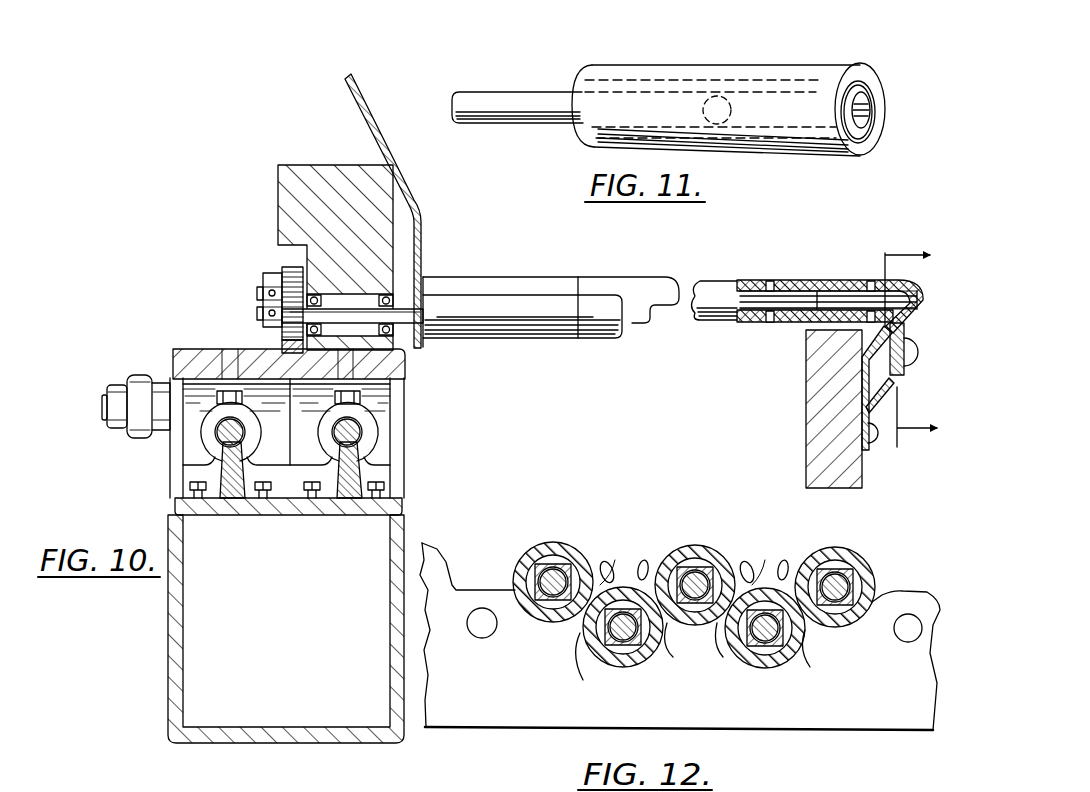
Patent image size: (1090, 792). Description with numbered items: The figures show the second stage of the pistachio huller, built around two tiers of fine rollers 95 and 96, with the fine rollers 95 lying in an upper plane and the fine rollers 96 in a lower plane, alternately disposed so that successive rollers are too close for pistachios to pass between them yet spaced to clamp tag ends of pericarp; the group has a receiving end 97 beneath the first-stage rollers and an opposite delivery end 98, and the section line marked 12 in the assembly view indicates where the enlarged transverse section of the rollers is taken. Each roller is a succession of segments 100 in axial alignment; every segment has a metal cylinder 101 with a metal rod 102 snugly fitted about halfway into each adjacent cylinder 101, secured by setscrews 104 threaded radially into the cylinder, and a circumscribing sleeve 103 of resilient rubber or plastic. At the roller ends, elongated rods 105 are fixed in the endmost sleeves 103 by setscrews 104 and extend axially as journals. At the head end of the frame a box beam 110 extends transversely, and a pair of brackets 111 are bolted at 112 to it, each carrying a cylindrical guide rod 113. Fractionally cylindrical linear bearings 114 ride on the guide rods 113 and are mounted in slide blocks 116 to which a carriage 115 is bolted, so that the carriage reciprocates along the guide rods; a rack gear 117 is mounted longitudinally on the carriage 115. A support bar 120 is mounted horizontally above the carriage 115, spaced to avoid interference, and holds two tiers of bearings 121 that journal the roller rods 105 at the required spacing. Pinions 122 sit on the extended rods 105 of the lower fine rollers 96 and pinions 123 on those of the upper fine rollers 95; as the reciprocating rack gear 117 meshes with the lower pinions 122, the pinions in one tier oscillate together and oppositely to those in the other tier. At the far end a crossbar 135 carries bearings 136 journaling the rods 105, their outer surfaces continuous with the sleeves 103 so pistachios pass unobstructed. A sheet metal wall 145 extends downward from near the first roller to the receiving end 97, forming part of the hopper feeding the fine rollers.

In FIG. 10, the fine rollers 95 is at (533, 285).
In FIG. 12, the fine rollers 95 is at (533, 547).
In FIG. 10, the fine rollers 96 is at (522, 327).
In FIG. 12, the fine rollers 96 is at (610, 664).
In FIG. 10, the receiving end 97 is at (436, 323).
In FIG. 10, the delivery end 98 is at (870, 278).
In FIG. 11, the segments 100 is at (723, 60).
In FIG. 10, the segments 100 is at (563, 290).
In FIG. 11, the metal cylinder 101 is at (863, 137).
In FIG. 10, the metal cylinder 101 is at (838, 280).
In FIG. 12, the metal cylinder 101 is at (521, 551).
In FIG. 11, the metal rod 102 is at (545, 98).
In FIG. 10, the metal rod 102 is at (748, 281).
In FIG. 11, the sleeve of resilient material 103 is at (863, 74).
In FIG. 10, the sleeve of resilient material 103 is at (748, 322).
In FIG. 12, the sleeve of resilient material 103 is at (545, 547).
In FIG. 11, the setscrews 104 is at (635, 77).
In FIG. 10, the setscrews 104 is at (771, 281).
In FIG. 10, the elongated rods 105 is at (358, 312).
In FIG. 10, the box beam 110 is at (173, 647).
In FIG. 10, the brackets 111 is at (353, 473).
In FIG. 10, the bolts 112 is at (377, 498).
In FIG. 10, the cylindrical guide rod 113 is at (358, 438).
In FIG. 10, the linear bearings 114 is at (373, 430).
In FIG. 10, the carriage 115 is at (187, 353).
In FIG. 10, the slide blocks 116 is at (377, 405).
In FIG. 10, the rack gear 117 is at (280, 347).
In FIG. 10, the support bar 120 is at (285, 188).
In FIG. 10, the bearings 121 is at (314, 294).
In FIG. 10, the pinions 122 is at (283, 305).
In FIG. 10, the pinions 123 is at (292, 266).
In FIG. 10, the crossbar 135 is at (806, 430).
In FIG. 10, the bearings 136 is at (910, 336).
In FIG. 12, the bearings 136 is at (840, 712).
In FIG. 10, the sheet metal wall 145 is at (360, 113).
In FIG. 10, the section line 12 is at (911, 344).